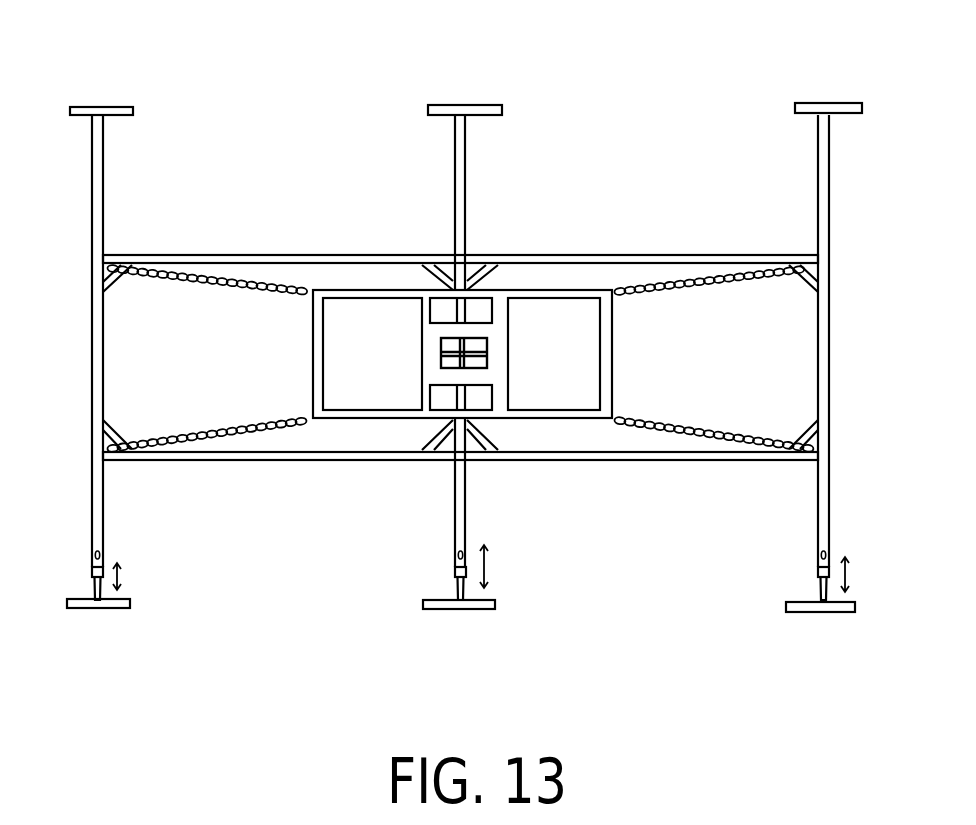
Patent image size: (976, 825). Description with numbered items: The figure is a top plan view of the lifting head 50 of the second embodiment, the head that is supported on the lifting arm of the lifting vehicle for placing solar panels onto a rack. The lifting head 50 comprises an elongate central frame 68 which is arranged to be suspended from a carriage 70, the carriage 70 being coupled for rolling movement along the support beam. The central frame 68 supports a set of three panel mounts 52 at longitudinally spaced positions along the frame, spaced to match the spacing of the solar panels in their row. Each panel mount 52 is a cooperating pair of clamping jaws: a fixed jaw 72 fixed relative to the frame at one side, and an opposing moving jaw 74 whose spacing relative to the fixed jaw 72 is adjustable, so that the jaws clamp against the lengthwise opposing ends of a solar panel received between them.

The lifting head 50 is at (272, 90).
The panel mount 52 is at (79, 638).
The central frame 68 is at (605, 250).
The carriage 70 is at (490, 351).
The fixed jaw 72 is at (125, 116).
The moving jaw 74 is at (110, 610).